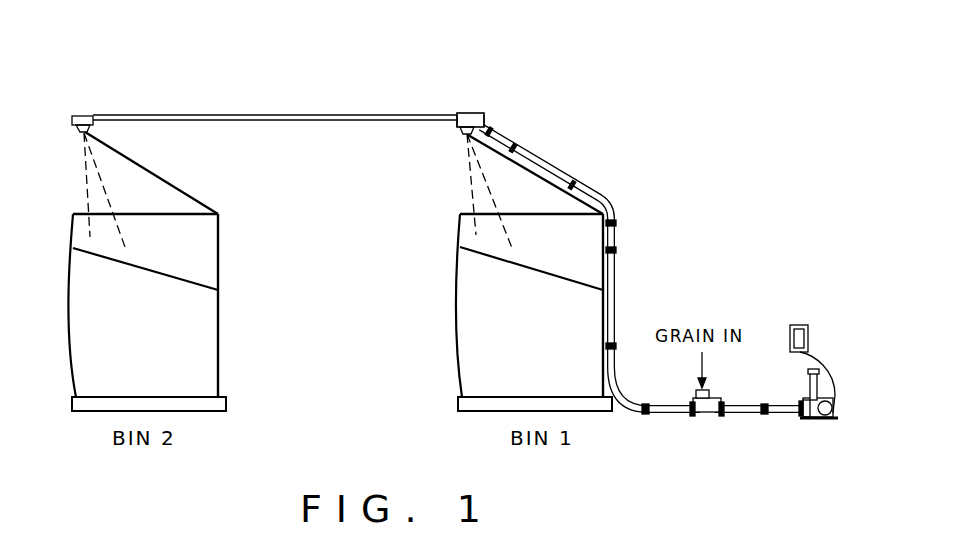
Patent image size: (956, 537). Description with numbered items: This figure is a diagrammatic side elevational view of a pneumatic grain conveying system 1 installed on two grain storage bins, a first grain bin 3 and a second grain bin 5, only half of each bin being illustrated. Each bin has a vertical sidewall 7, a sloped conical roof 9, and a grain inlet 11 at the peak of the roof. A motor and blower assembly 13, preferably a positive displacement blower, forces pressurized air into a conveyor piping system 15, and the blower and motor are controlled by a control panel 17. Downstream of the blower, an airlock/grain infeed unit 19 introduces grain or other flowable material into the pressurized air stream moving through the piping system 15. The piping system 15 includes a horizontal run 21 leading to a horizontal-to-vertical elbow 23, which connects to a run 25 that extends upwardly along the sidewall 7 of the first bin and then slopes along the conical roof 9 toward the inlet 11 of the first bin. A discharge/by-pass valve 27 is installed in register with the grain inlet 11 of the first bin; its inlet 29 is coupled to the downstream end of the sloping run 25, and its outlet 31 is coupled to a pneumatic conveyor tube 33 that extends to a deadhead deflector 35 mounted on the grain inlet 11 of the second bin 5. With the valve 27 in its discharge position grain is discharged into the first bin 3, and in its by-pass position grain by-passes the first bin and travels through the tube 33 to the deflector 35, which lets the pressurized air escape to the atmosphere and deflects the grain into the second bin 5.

The pneumatic grain conveying system 1 is at (577, 92).
The first grain storage bin 3 is at (582, 233).
The second grain storage bin 5 is at (222, 223).
The vertical sidewall 7 is at (221, 257).
The sloped conical roof 9 is at (160, 180).
The grain inlet 11 is at (92, 127).
The motor and blower assembly 13 is at (821, 424).
The conveyor piping system 15 is at (748, 426).
The control panel 17 is at (806, 330).
The airlock/grain infeed unit 19 is at (708, 392).
The horizontal run 21 is at (673, 413).
The horizontal-to-vertical elbow 23 is at (622, 389).
The vertical and sloped run 25 is at (538, 158).
The discharge/by-pass valve 27 is at (469, 102).
The valve inlet 29 is at (487, 117).
The valve outlet 31 is at (457, 115).
The pneumatic conveyor tube 33 is at (265, 115).
The deadhead deflector 35 is at (77, 115).